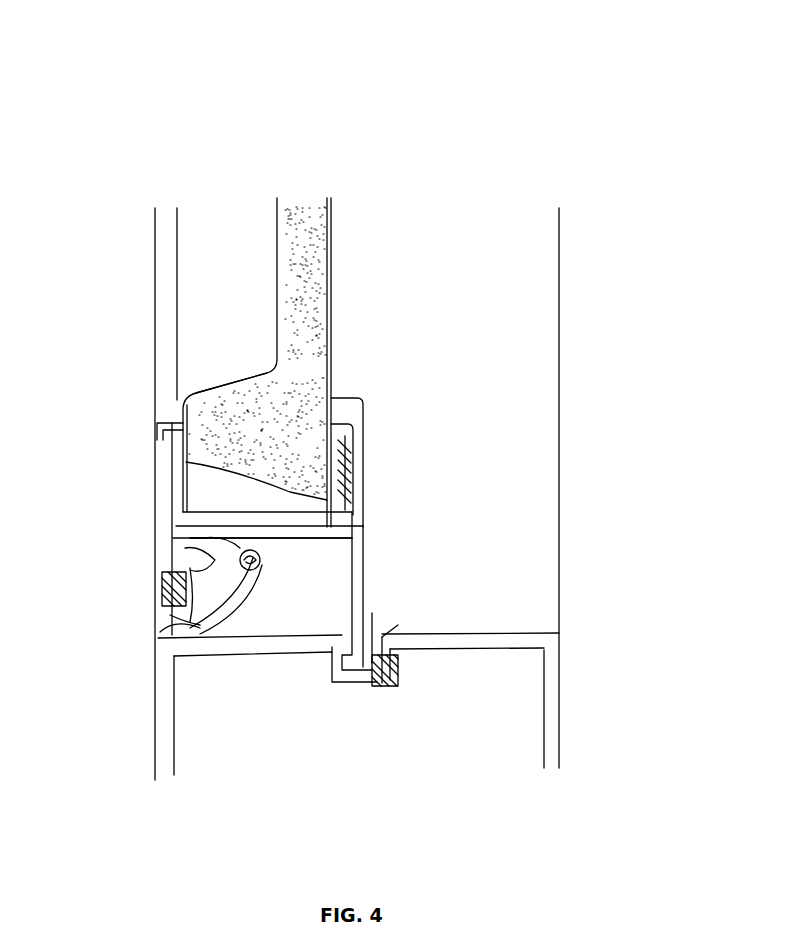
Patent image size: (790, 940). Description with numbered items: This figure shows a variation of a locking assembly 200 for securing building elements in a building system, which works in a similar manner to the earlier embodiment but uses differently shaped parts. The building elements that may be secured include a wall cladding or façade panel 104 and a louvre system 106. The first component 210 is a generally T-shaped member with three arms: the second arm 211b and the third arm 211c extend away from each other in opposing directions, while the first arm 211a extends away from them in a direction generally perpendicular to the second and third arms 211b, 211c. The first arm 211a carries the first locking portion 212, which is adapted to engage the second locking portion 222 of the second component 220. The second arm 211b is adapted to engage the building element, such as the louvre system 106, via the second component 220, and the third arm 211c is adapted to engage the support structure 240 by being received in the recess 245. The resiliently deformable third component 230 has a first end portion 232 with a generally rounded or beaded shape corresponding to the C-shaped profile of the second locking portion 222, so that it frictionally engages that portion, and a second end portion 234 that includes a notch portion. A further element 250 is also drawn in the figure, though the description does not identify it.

The locking assembly 200 is at (645, 132).
The wall cladding or façade panel 104 is at (160, 512).
The louvre system 106 is at (294, 322).
The first component 210 is at (360, 540).
The first arm 211a is at (285, 530).
The second arm 211b is at (364, 448).
The third arm 211c is at (353, 590).
The first locking portion 212 is at (237, 540).
The second component 220 is at (185, 548).
The second locking portion 222 is at (180, 578).
The third component 230 is at (245, 604).
The first end portion 232 is at (262, 556).
The second end portion 234 is at (178, 624).
The support structure 240 is at (245, 660).
The recess 245 is at (378, 660).
The retainer 250 is at (382, 613).